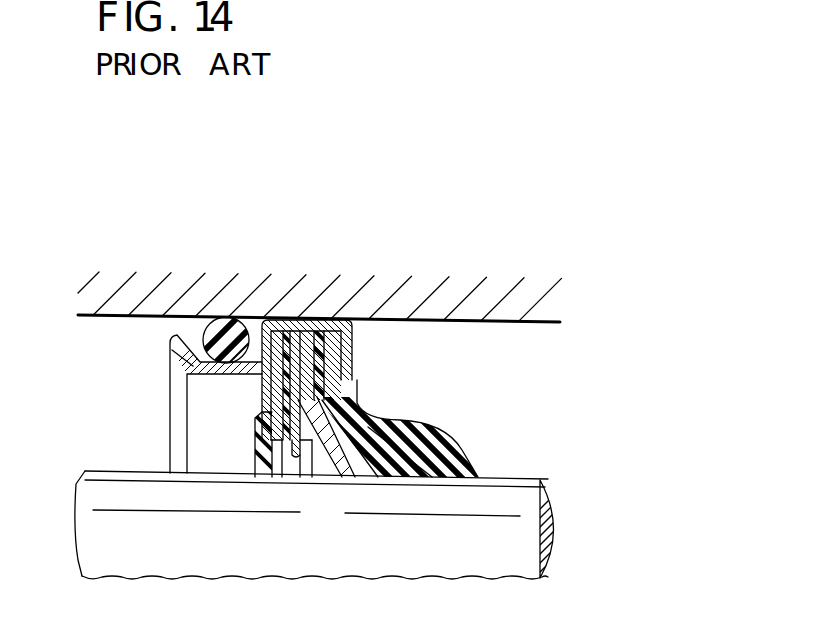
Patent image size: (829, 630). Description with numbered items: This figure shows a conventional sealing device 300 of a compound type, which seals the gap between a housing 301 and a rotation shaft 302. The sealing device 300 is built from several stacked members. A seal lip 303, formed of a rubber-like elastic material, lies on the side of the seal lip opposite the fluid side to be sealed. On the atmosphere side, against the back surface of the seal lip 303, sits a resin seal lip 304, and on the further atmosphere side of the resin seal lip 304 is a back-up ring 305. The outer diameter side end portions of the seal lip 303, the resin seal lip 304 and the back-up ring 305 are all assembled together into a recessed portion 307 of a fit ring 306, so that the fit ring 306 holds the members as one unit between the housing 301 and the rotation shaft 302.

The sealing device 300 is at (512, 368).
The housing 301 is at (546, 318).
The rotation shaft 302 is at (542, 480).
The seal lip 303 is at (358, 383).
The resin seal lip 304 is at (368, 416).
The back-up ring 305 is at (270, 383).
The fit ring 306 is at (316, 325).
The recessed portion 307 is at (353, 325).